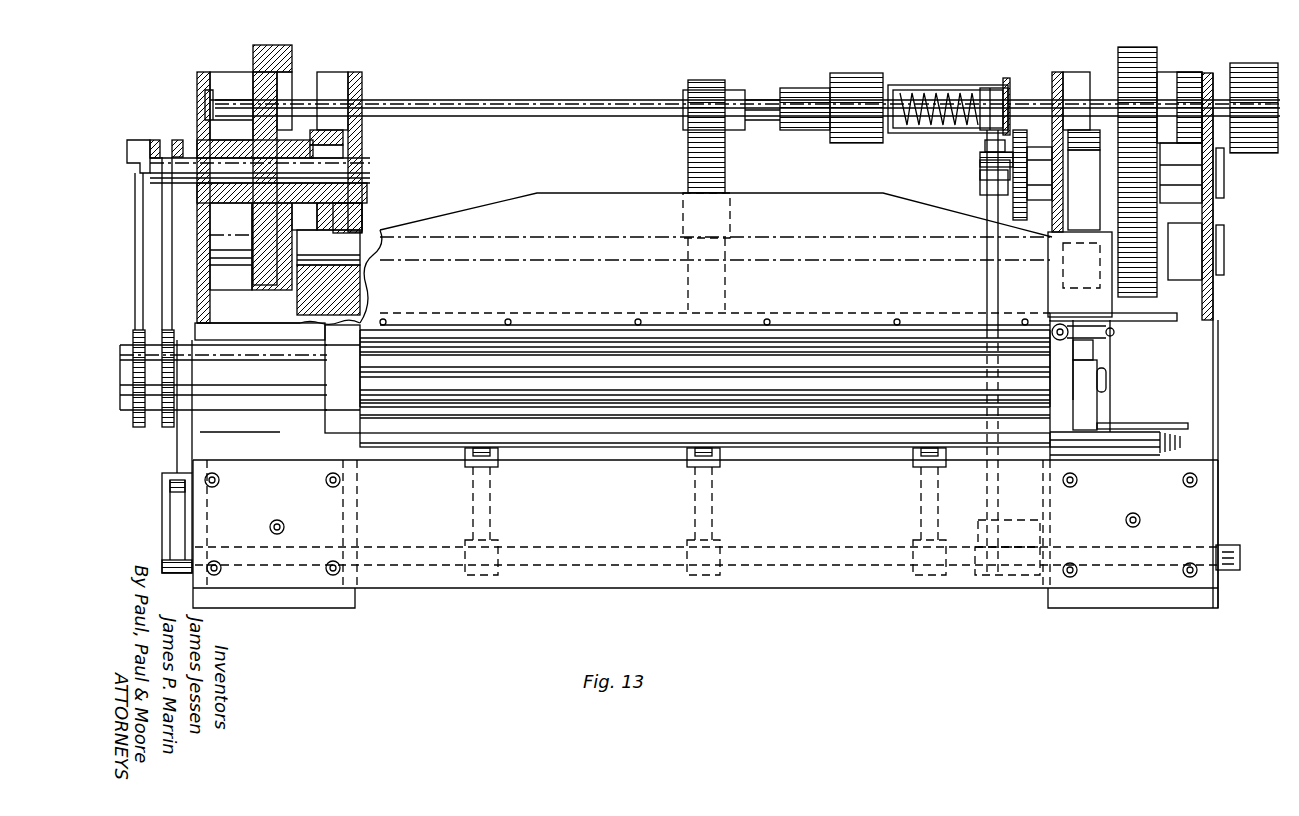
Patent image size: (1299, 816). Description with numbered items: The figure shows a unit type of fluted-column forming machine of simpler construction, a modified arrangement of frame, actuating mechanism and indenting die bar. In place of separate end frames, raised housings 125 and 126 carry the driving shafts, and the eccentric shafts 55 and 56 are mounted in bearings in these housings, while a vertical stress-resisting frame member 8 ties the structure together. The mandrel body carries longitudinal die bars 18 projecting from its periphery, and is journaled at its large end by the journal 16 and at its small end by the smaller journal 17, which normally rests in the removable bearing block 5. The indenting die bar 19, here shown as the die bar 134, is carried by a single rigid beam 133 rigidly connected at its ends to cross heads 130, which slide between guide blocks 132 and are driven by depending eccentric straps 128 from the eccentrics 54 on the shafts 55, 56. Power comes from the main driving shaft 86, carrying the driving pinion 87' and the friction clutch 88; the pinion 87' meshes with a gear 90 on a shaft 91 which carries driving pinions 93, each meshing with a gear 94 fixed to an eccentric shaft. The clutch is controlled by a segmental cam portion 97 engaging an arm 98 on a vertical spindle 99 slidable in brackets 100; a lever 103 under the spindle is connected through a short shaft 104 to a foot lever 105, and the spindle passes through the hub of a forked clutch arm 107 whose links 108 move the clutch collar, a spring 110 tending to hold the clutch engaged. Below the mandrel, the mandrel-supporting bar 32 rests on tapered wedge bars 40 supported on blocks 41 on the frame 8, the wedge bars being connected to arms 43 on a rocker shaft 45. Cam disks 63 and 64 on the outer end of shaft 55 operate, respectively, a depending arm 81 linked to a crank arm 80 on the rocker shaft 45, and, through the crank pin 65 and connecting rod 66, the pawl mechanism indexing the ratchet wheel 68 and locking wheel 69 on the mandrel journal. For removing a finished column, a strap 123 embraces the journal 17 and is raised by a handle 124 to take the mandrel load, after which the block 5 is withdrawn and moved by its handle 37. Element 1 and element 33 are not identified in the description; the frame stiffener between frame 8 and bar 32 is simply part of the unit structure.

The frame 1 is at (1160, 446).
The bearing block 5 is at (1085, 408).
The stress-resisting frame member 8 is at (620, 590).
The journal 16 is at (266, 360).
The journal 17 is at (1108, 378).
The die bars 18 is at (778, 375).
The indenting die bar 19 is at (560, 335).
The mandrel-supporting bar 32 is at (613, 442).
The bar 33 is at (836, 432).
The handle 37 is at (1150, 424).
The wedge bars 40 is at (490, 455).
The blocks 41 is at (468, 465).
The arms 43 is at (488, 505).
The rocker shaft 45 is at (563, 548).
The eccentrics 54 is at (343, 150).
The eccentric shaft 55 is at (370, 172).
The eccentric shaft 56 is at (1224, 175).
The cam disk 63 is at (177, 140).
The cam disk 64 is at (155, 140).
The crank pin 65 is at (135, 140).
The connecting rod 66 is at (139, 265).
The ratchet wheel 68 is at (138, 428).
The locking wheel 69 is at (166, 430).
The crank arm 80 is at (177, 518).
The depending arm 81 is at (178, 268).
The main driving shaft 86 is at (595, 102).
The driving pinion 87' is at (756, 89).
The friction clutch 88 is at (858, 75).
The gear 90 is at (718, 178).
The shaft 91 is at (558, 232).
The driving pinions 93 is at (1213, 285).
The gear 94 is at (292, 62).
The segmental cam portion 97 is at (985, 165).
The arm 98 is at (985, 145).
The vertical spindle 99 is at (993, 498).
The brackets 100 is at (990, 182).
The lever 103 is at (988, 572).
The short shaft 104 is at (1143, 549).
The foot lever 105 is at (1226, 545).
The clutch arm 107 is at (1000, 88).
The links 108 is at (935, 92).
The spring 110 is at (915, 92).
The strap 123 is at (1060, 360).
The handle 124 is at (1114, 333).
The housing 125 is at (365, 210).
The housing 126 is at (1233, 232).
The eccentric straps 128 is at (362, 222).
The cross heads 130 is at (300, 300).
The guide blocks 132 is at (388, 320).
The rigid beam 133 is at (803, 200).
The indenting die bar 134 is at (636, 326).